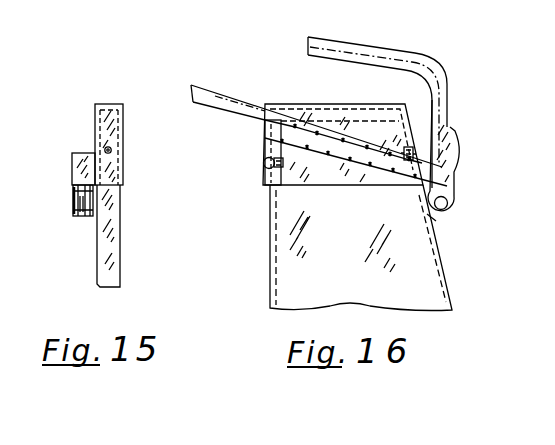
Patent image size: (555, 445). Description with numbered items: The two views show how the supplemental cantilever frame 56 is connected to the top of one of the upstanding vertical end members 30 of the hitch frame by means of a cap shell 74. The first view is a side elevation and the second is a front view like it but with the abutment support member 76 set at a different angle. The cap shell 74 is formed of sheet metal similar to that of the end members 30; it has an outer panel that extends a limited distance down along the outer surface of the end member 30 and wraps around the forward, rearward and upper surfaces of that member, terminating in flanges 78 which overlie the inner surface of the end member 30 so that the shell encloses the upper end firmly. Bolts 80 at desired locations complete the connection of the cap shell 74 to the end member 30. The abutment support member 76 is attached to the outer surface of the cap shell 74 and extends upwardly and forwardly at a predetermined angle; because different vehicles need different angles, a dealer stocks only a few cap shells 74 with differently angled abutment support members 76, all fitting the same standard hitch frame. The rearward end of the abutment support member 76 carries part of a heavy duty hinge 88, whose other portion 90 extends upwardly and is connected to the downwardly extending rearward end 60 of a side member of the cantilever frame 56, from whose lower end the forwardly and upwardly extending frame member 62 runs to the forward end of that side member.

In FIG. 15, the upstanding vertical end member 30 is at (118, 244).
In FIG. 16, the upstanding vertical end member 30 is at (361, 248).
In FIG. 16, the supplemental cantilever frame 56 is at (396, 48).
In FIG. 16, the downwardly extending rearward end 60 is at (446, 88).
In FIG. 16, the forwardly and upwardly extending frame member 62 is at (230, 104).
In FIG. 15, the cap shell 74 is at (124, 171).
In FIG. 16, the cap shell 74 is at (326, 187).
In FIG. 15, the abutment support member 76 is at (80, 154).
In FIG. 16, the abutment support member 76 is at (285, 141).
In FIG. 16, the flange 78 is at (265, 188).
In FIG. 15, the bolt 80 is at (111, 149).
In FIG. 16, the bolt 80 is at (418, 147).
In FIG. 15, the heavy duty hinge 88 is at (77, 216).
In FIG. 16, the heavy duty hinge 88 is at (447, 214).
In FIG. 16, the hinge portion 90 is at (457, 173).